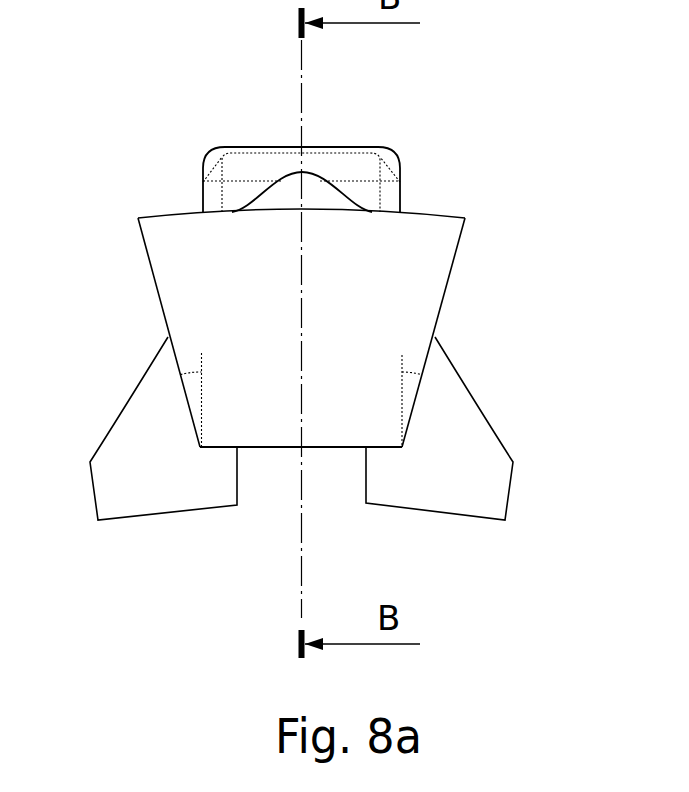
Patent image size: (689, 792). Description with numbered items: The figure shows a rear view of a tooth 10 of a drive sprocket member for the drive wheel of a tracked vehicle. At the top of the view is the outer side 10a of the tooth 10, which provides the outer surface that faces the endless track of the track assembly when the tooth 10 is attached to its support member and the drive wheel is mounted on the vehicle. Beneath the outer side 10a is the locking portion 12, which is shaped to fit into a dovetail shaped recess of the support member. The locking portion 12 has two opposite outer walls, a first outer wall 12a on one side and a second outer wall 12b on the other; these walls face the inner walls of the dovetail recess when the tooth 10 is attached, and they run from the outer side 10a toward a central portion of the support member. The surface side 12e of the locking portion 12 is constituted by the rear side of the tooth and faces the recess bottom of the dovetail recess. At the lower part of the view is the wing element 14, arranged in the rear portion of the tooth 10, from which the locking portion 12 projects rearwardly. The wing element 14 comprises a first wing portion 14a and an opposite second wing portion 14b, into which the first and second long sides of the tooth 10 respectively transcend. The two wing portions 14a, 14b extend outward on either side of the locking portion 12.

The tooth 10 is at (465, 138).
The outer side 10a is at (335, 144).
The locking portion 12 is at (304, 293).
The first outer wall 12a is at (153, 285).
The second outer wall 12b is at (445, 300).
The surface side 12e is at (182, 252).
The wing element 14 is at (295, 466).
The first wing portion 14a is at (114, 418).
The second wing portion 14b is at (476, 398).